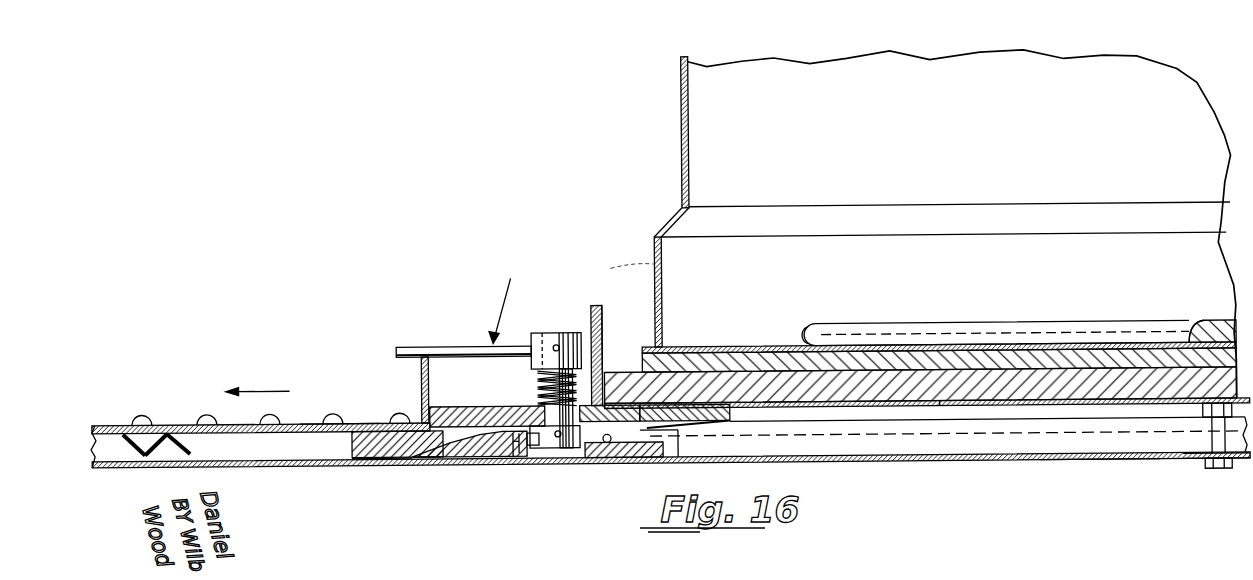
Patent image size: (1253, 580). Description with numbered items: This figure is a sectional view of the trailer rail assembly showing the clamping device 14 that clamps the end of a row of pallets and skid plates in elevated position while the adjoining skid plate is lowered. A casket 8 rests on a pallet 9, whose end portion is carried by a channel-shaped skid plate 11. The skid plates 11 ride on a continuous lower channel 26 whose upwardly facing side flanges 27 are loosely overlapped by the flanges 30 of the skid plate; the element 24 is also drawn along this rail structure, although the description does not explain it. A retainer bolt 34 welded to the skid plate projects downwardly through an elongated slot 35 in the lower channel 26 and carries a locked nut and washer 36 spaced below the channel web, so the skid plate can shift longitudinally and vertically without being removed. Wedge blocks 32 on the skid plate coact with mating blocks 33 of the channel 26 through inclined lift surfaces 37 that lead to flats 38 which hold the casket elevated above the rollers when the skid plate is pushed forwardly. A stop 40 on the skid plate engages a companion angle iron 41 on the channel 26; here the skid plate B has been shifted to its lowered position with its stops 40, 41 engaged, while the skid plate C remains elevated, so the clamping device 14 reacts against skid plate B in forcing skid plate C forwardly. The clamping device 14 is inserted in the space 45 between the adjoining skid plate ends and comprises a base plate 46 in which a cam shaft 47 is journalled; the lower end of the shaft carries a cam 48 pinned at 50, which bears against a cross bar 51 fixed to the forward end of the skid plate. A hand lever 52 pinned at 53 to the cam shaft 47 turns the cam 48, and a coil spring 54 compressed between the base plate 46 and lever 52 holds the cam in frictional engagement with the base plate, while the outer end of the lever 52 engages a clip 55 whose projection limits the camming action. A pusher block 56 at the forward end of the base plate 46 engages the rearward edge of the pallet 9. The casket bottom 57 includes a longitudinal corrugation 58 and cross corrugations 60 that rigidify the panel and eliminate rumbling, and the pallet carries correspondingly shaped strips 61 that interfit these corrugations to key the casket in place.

The casket 8 is at (684, 97).
The pallet 9 is at (1012, 380).
The skid plate 11 is at (295, 416).
The clamping device 14 is at (506, 298).
The rollers 24 is at (146, 418).
The lower channel 26 is at (873, 465).
The side flanges 27 is at (968, 440).
The flanges 30 is at (815, 436).
The wedge blocks 32 is at (362, 442).
The mating blocks 33 is at (455, 458).
The retainer bolt 34 is at (1215, 437).
The elongated slot 35 is at (1106, 464).
The nut and washer 36 is at (1220, 474).
The inclined lift surfaces 37 is at (420, 460).
The flats 38 is at (365, 462).
The stop 40 is at (195, 448).
The angle iron 41 is at (120, 445).
The space 45 is at (572, 460).
The base plate 46 is at (458, 418).
The cam shaft 47 is at (540, 386).
The cam 48 is at (532, 460).
The pin 50 is at (555, 458).
The cross bar 51 is at (514, 458).
The hand lever 52 is at (436, 345).
The pin 53 is at (560, 332).
The coil spring 54 is at (604, 358).
The clip 55 is at (422, 363).
The pusher block 56 is at (605, 318).
The bottom 57 is at (735, 347).
The longitudinal corrugation 58 is at (1210, 323).
The cross corrugations 60 is at (1027, 325).
The strips 61 is at (806, 340).
The skid plate B is at (338, 420).
The skid plate C is at (940, 408).